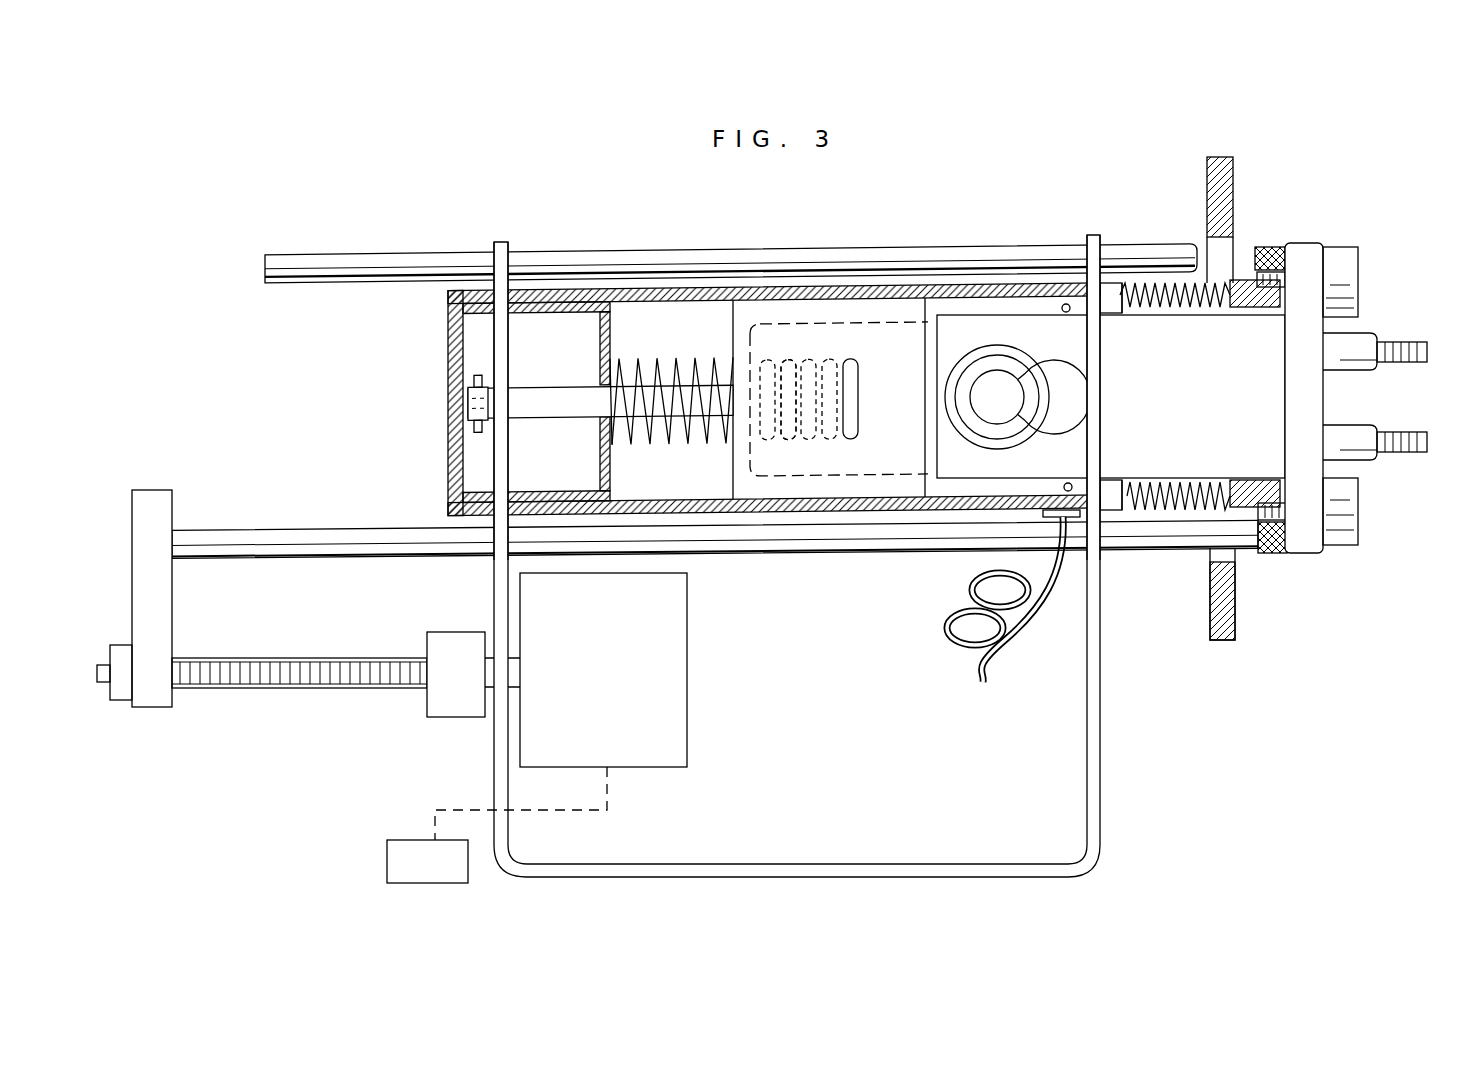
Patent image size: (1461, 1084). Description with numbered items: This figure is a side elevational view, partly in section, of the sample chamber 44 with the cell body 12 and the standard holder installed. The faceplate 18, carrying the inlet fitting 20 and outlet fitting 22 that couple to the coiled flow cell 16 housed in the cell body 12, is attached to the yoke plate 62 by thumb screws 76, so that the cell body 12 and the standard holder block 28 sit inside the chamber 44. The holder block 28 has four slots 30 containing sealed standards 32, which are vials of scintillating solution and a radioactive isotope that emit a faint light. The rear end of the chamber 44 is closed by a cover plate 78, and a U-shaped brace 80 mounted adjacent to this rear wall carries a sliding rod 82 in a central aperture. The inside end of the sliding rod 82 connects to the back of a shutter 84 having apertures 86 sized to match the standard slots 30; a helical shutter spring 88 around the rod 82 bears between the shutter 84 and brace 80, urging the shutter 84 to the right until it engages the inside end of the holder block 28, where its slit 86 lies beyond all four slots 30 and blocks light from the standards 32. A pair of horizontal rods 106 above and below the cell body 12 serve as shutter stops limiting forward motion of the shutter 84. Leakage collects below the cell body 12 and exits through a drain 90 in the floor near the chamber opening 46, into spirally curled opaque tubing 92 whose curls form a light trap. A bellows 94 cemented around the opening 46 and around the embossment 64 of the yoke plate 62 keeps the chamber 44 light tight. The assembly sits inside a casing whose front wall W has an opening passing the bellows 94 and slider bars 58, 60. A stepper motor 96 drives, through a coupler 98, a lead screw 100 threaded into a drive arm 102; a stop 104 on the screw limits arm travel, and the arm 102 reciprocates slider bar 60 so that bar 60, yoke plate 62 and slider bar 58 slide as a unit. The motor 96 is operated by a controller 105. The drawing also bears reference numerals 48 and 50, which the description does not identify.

The cell body 12 is at (968, 316).
The flow cell 16 is at (1000, 360).
The front faceplate 18 is at (1305, 252).
The inlet fitting 20 is at (1395, 348).
The outlet fitting 22 is at (1400, 440).
The holder block 28 is at (797, 322).
The slots 30 is at (805, 450).
The sealed standards 32 is at (788, 400).
The sample chamber 44 is at (885, 290).
The opening 46 is at (1115, 520).
The frame 48 is at (790, 862).
The frame rods 50 is at (505, 245).
The slider bar 58 is at (345, 272).
The slider bar 60 is at (370, 540).
The yoke plate 62 is at (1262, 530).
The embossment 64 is at (1240, 283).
The thumb screws 76 is at (1345, 256).
The cover plate 78 is at (455, 327).
The U-shaped brace 80 is at (612, 310).
The sliding rod 82 is at (530, 405).
The shutter 84 is at (735, 455).
The apertures 86 is at (855, 450).
The shutter spring 88 is at (620, 365).
The drain 90 is at (1032, 492).
The opaque tubing 92 is at (1010, 636).
The bellows 94 is at (1160, 282).
The stepper motor 96 is at (688, 745).
The coupler 98 is at (457, 716).
The lead screw 100 is at (335, 660).
The drive arm 102 is at (150, 502).
The stop 104 is at (125, 700).
The controller 105 is at (387, 860).
The shutter stops 106 is at (1070, 312).
The front wall W is at (1220, 158).